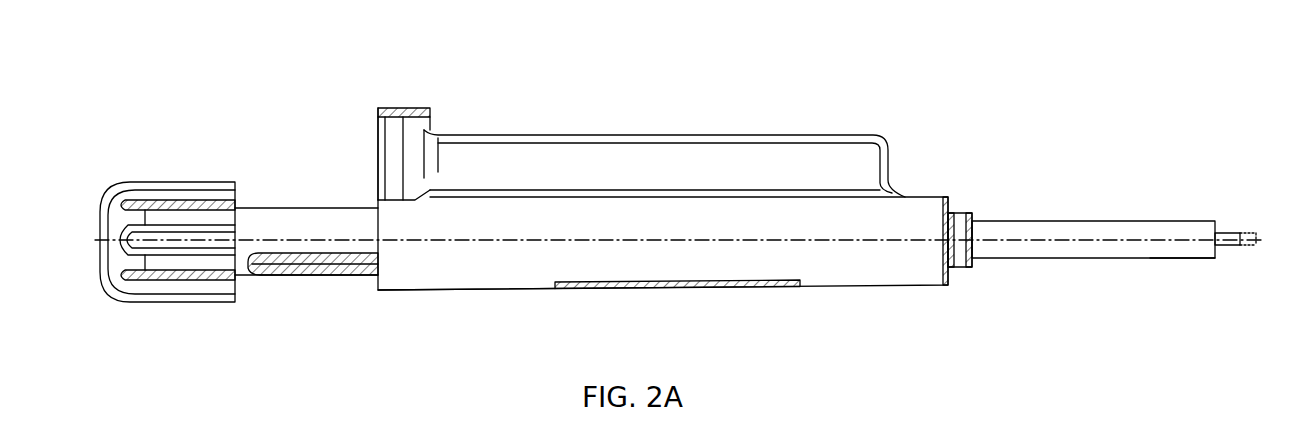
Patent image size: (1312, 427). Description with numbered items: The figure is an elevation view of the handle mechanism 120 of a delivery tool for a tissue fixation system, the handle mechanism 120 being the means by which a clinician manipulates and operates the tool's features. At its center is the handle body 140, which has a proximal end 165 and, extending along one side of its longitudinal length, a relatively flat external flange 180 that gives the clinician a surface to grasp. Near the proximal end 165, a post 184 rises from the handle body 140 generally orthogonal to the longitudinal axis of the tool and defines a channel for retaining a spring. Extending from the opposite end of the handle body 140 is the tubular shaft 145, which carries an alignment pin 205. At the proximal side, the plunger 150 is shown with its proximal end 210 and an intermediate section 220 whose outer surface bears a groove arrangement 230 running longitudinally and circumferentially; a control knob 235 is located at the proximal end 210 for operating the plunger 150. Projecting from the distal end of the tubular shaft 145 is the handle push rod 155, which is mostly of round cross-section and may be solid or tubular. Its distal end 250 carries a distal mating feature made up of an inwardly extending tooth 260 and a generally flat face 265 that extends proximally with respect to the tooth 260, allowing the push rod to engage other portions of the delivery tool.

The handle mechanism 120 is at (497, 66).
The handle body 140 is at (648, 213).
The tubular shaft 145 is at (1050, 221).
The plunger 150 is at (198, 303).
The handle push rod 155 is at (1226, 232).
The proximal end 165 is at (378, 296).
The external flange 180 is at (717, 135).
The post 184 is at (373, 158).
The alignment pin 205 is at (1198, 266).
The proximal end 210 is at (150, 183).
The intermediate section 220 is at (283, 208).
The groove arrangement 230 is at (310, 280).
The control knob 235 is at (157, 302).
The distal end 250 is at (1252, 248).
The tooth 260 is at (1262, 237).
The flat face 265 is at (1247, 237).